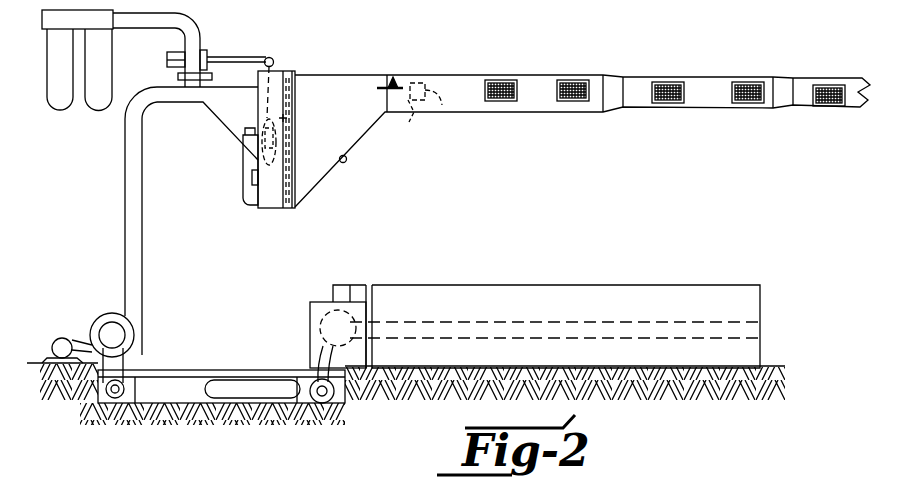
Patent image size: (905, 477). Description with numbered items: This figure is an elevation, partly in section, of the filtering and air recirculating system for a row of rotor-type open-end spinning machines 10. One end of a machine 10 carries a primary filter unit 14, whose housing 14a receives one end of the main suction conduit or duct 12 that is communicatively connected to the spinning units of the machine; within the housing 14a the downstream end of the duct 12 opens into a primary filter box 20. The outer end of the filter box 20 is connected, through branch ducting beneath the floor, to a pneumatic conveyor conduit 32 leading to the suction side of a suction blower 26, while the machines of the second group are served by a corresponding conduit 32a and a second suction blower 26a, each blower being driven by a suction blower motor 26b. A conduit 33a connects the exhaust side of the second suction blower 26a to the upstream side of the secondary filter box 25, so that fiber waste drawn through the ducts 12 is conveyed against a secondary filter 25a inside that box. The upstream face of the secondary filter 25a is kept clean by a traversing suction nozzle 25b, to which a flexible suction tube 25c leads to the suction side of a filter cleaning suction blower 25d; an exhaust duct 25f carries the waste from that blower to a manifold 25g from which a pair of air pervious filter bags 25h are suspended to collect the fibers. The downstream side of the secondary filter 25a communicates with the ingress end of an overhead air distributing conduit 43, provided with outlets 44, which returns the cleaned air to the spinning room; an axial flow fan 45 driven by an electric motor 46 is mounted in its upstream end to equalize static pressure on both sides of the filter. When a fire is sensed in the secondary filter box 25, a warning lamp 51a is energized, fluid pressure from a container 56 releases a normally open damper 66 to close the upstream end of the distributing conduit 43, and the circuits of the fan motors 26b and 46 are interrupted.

The open-end spinning machine 10 is at (548, 285).
The main suction conduit or duct 12 is at (678, 322).
The primary filter unit 14 is at (296, 298).
The housing 14a is at (322, 305).
The primary filter box 20 is at (300, 325).
The secondary filter box 25 is at (281, 212).
The secondary filter 25a is at (294, 190).
The traversing suction nozzle 25b is at (286, 118).
The flexible suction tube 25c is at (272, 58).
The filter cleaning suction blower 25d is at (203, 51).
The exhaust duct 25f is at (192, 22).
The manifold 25g is at (96, 24).
The filter bags or socks 25h is at (108, 138).
The suction blower 26 is at (206, 411).
The second suction blower 26a is at (135, 350).
The suction blower motor 26b is at (58, 338).
The pneumatic conveyor conduit 32 is at (273, 395).
The pneumatic conveyor conduit 32a is at (112, 405).
The conduit 33a is at (134, 232).
The air distributing conduit or duct 43 is at (567, 75).
The outlets 44 is at (745, 101).
The axial flow fan 45 is at (409, 124).
The electric motor 46 is at (434, 97).
The warning device or lamp 51a is at (347, 161).
The container 56 is at (243, 181).
The damper 66 is at (393, 76).